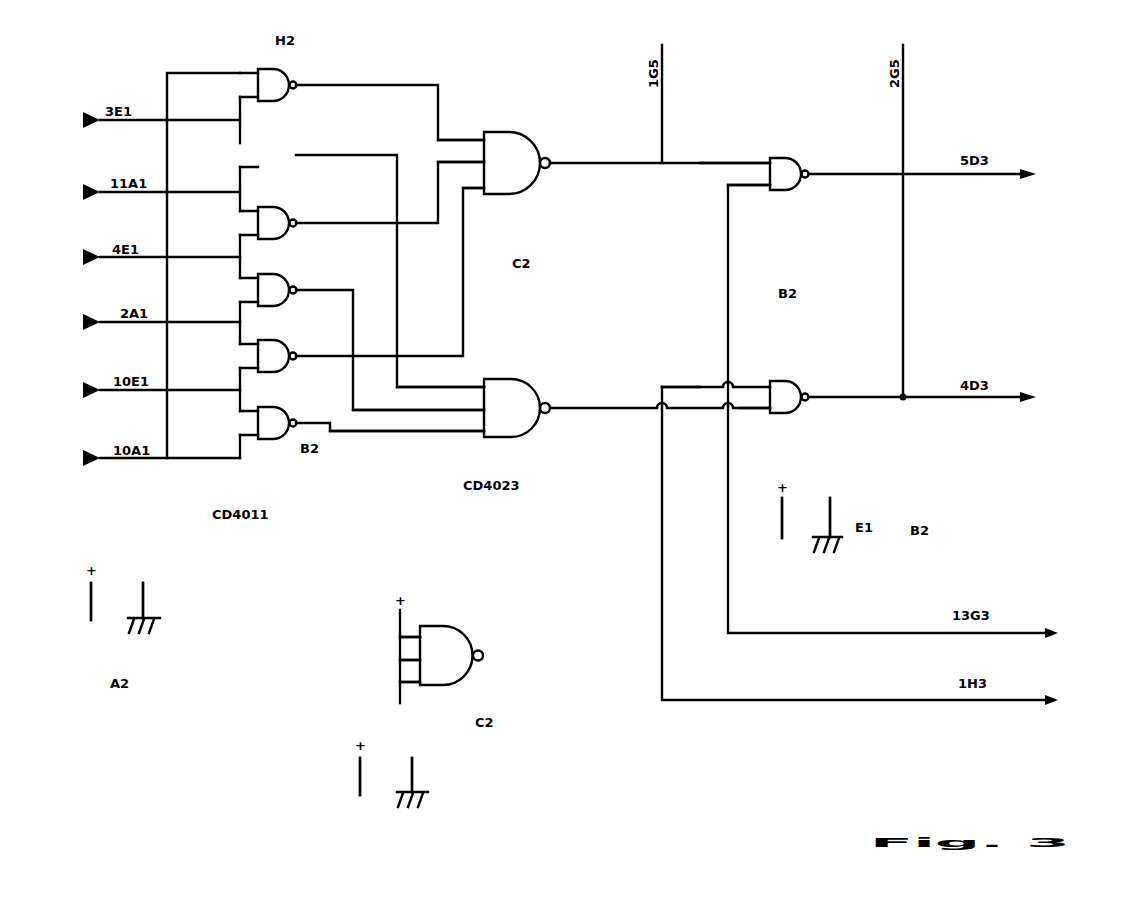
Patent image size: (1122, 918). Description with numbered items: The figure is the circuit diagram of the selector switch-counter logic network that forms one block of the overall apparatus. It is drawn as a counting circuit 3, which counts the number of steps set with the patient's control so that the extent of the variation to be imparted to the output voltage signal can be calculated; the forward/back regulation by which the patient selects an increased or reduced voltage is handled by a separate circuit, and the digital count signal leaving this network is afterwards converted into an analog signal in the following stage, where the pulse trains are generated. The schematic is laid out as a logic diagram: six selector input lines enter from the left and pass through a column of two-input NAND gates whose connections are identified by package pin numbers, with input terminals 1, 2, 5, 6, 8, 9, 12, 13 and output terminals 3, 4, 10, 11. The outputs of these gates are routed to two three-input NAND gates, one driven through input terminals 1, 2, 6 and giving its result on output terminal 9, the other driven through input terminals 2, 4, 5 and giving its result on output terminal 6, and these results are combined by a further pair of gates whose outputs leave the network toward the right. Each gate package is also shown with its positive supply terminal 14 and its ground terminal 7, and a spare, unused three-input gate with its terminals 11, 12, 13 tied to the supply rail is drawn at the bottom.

The NAND gate input pin 1 is at (362, 202).
The NAND gate input pin 2 is at (362, 242).
The counting circuit 3 is at (285, 219).
The NAND gate pin 4 is at (371, 417).
The NAND gate input pin 5 is at (362, 300).
The NAND gate pin 6 is at (401, 314).
The ground pin 7 is at (487, 636).
The NAND gate input pin 8 is at (505, 193).
The NAND gate pin 9 is at (661, 177).
The NAND gate output pin 10 is at (540, 197).
The NAND gate pin 11 is at (540, 481).
The NAND gate input pin 12 is at (501, 470).
The NAND gate input pin 13 is at (505, 467).
The positive supply pin 14 is at (438, 656).